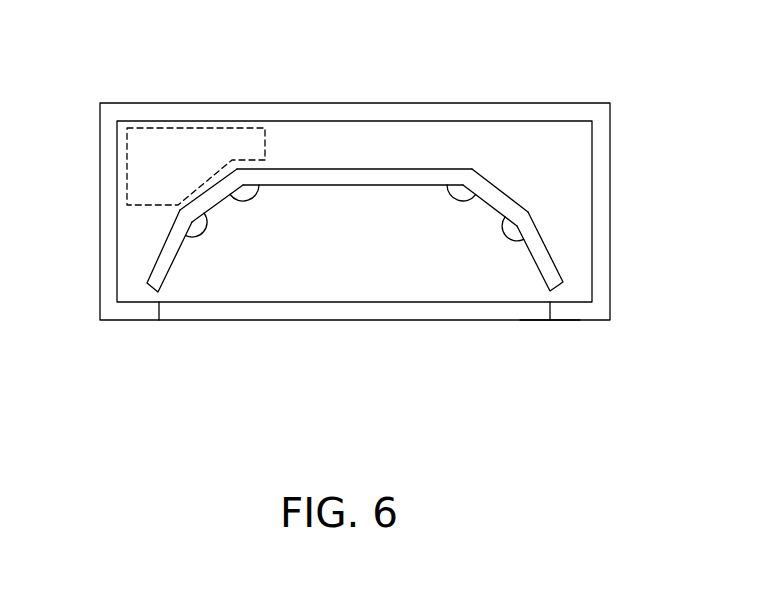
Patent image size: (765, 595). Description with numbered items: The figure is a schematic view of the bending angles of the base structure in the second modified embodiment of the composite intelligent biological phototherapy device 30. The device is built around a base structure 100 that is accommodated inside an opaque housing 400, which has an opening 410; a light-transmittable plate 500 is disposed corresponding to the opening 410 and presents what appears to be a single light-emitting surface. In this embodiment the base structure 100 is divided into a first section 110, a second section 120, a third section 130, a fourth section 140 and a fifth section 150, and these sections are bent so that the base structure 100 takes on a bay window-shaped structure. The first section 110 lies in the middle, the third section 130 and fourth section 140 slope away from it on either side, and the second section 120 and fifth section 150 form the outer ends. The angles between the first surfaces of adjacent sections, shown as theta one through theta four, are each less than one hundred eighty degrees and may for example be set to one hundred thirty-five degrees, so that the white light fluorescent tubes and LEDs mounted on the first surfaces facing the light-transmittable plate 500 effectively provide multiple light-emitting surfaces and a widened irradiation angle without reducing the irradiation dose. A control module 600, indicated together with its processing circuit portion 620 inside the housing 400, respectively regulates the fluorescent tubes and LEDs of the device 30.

The composite intelligent biological phototherapy device 30 is at (84, 23).
The base structure 100 is at (355, 297).
The first section 110 is at (353, 175).
The second section 120 is at (168, 257).
The third section 130 is at (220, 200).
The fourth section 140 is at (493, 202).
The fifth section 150 is at (522, 300).
The housing 400 is at (550, 115).
The opening 410 is at (542, 327).
The light-transmittable plate 500 is at (166, 315).
The control module 600 is at (196, 166).
The processing circuit portion 620 is at (255, 160).